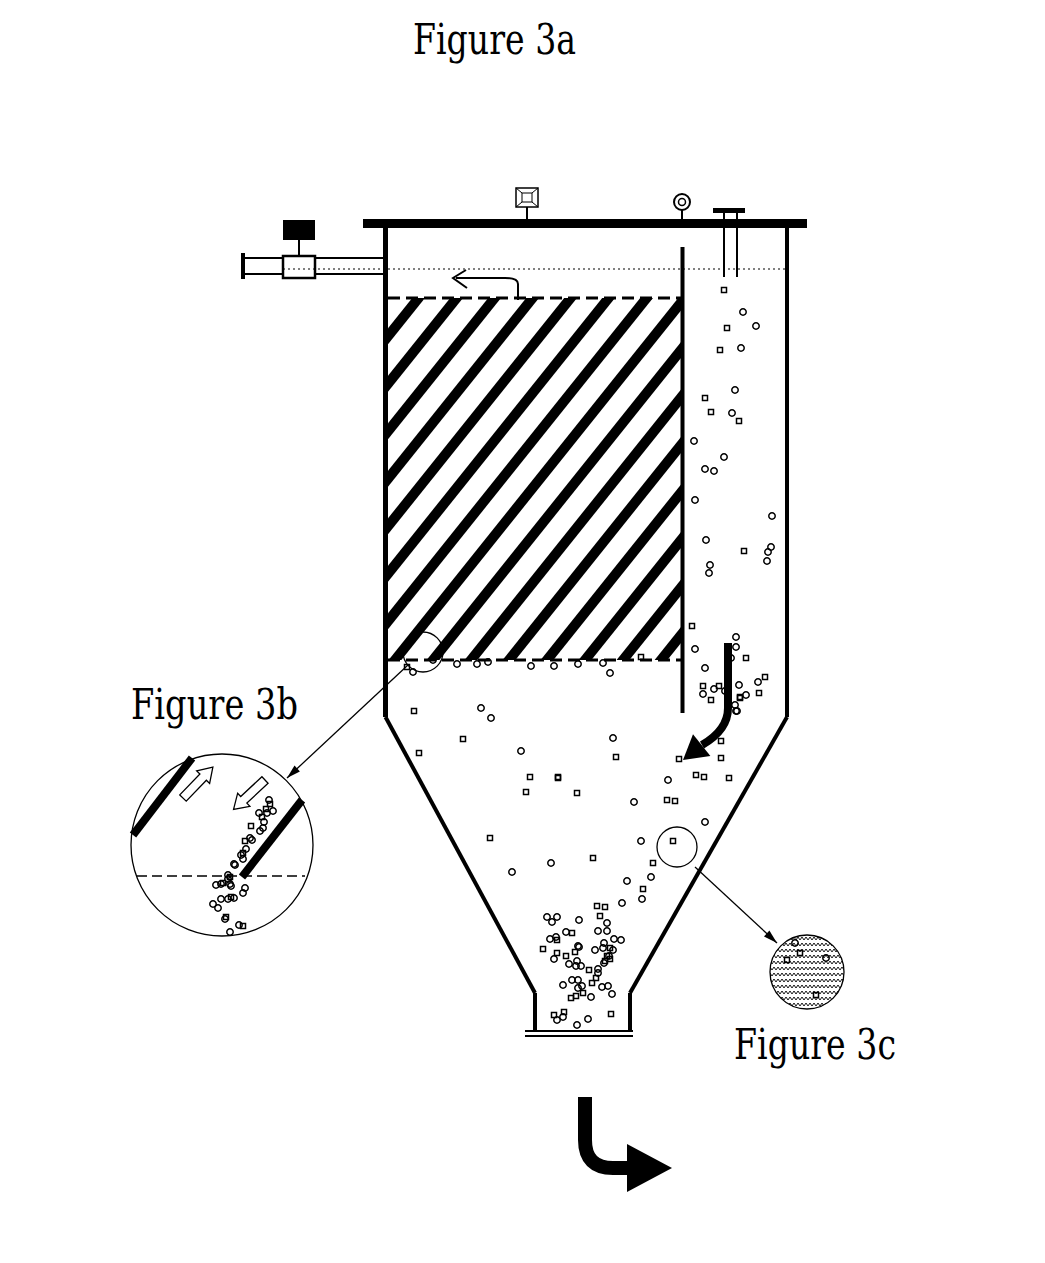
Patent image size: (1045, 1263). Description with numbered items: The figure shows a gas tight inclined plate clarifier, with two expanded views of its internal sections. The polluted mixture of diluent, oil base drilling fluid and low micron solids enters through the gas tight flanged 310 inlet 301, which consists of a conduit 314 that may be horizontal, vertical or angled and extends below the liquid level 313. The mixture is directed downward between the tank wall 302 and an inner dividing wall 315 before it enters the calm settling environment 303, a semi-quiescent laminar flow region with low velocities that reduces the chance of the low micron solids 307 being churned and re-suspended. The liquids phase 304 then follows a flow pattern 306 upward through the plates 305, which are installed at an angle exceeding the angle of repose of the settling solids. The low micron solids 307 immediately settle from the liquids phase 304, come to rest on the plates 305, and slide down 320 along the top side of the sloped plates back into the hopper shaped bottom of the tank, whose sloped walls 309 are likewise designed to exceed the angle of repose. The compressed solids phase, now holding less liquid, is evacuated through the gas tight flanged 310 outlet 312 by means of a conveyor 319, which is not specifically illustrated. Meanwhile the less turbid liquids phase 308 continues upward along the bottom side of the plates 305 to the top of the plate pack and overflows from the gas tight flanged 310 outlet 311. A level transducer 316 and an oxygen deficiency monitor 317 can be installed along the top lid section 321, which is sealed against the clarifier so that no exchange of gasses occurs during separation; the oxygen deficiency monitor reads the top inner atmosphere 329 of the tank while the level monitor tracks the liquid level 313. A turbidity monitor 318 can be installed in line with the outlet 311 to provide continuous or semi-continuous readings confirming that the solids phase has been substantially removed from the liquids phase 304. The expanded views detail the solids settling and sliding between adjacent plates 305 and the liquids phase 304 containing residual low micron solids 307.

In FIG. 3A, the inlet 301 is at (729, 200).
In FIG. 3A, the tank wall 302 is at (788, 433).
In FIG. 3A, the calm settling environment 303 is at (718, 710).
In FIG. 3C, the liquids phase 304 is at (810, 973).
In FIG. 3A, the plates 305 is at (407, 542).
In FIG. 3B, the plates 305 is at (134, 833).
In FIG. 3B, the flow pattern 306 is at (187, 795).
In FIG. 3B, the low micron solids 307 is at (213, 904).
In FIG. 3C, the low micron solids 307 is at (840, 952).
In FIG. 3A, the less turbid liquids phase 308 is at (385, 290).
In FIG. 3A, the sloped walls of the tank 309 is at (717, 845).
In FIG. 3A, the gas tight flange 310 is at (243, 272).
In FIG. 3A, the outlet 311 is at (241, 266).
In FIG. 3A, the outlet 312 is at (578, 1037).
In FIG. 3A, the liquid level 313 is at (750, 268).
In FIG. 3A, the conduit 314 is at (737, 250).
In FIG. 3A, the inner dividing wall 315 is at (683, 452).
In FIG. 3A, the level transducer 316 is at (682, 193).
In FIG. 3A, the oxygen deficiency monitor 317 is at (527, 188).
In FIG. 3A, the turbidity monitor 318 is at (298, 219).
In FIG. 3A, the conveyor 319 is at (668, 1170).
In FIG. 3B, the slide down 320 is at (246, 808).
In FIG. 3A, the top lid section 321 is at (410, 218).
In FIG. 3A, the top inner atmosphere 329 is at (577, 218).